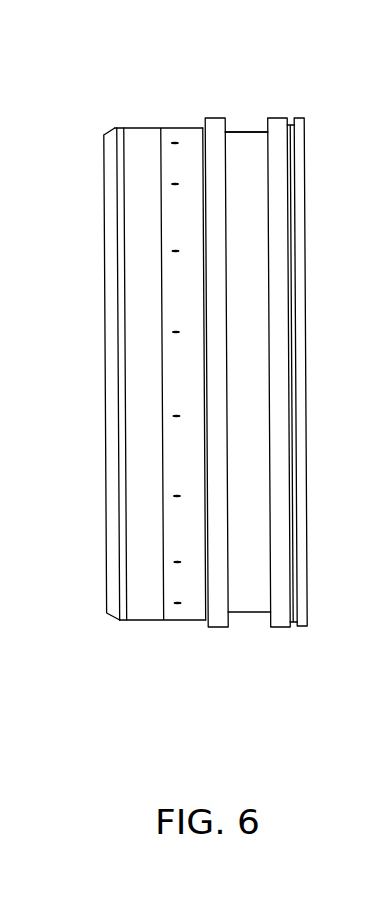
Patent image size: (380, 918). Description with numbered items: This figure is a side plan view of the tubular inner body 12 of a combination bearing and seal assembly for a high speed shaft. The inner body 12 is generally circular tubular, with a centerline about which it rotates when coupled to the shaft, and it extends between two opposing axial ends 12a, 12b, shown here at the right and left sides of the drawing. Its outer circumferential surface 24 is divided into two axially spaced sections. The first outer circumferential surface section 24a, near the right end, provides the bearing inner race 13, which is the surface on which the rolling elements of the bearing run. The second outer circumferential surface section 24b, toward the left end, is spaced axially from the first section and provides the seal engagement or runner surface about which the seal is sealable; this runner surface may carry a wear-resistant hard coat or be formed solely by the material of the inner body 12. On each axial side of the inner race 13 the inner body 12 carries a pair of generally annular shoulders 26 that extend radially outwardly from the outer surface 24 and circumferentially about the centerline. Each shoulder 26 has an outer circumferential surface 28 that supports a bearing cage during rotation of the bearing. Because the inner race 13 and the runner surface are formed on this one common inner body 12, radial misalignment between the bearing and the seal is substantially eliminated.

The tubular inner body 12 is at (203, 361).
The axial end 12a is at (305, 187).
The axial end 12b is at (104, 208).
The bearing inner race 13 is at (262, 313).
The outer circumferential surface 24 is at (188, 155).
The first outer circumferential surface section 24a is at (243, 130).
The second outer circumferential surface section 24b is at (139, 142).
The annular shoulders 26 is at (222, 627).
The outer circumferential surface 28 is at (277, 133).